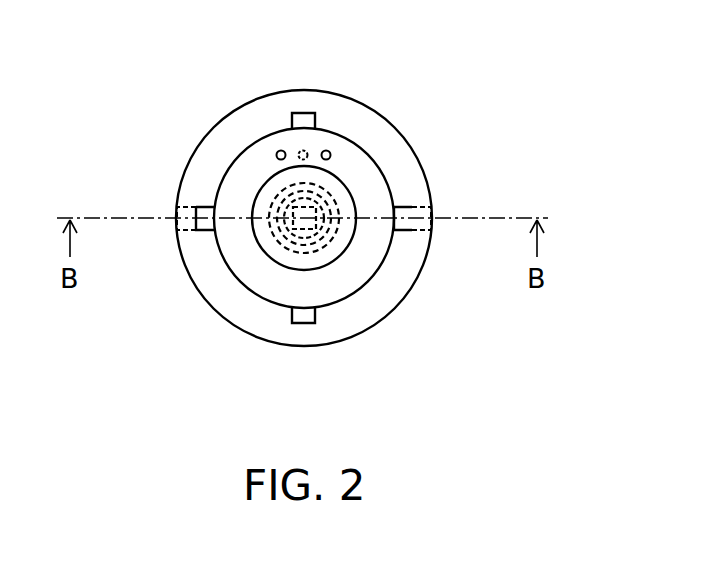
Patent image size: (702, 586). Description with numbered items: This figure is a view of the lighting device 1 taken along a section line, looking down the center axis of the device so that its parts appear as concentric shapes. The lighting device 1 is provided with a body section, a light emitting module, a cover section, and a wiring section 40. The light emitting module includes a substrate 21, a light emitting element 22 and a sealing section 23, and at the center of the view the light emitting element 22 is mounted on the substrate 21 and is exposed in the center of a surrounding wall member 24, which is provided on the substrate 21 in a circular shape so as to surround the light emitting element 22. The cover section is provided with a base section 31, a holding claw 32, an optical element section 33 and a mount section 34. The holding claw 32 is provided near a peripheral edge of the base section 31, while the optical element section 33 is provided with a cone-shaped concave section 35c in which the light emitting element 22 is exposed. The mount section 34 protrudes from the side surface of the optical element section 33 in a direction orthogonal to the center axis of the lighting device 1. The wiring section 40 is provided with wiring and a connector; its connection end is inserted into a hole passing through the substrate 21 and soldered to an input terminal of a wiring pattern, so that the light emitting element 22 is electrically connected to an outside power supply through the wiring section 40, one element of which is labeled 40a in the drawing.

The lighting device 1 is at (197, 93).
The substrate 21 is at (280, 233).
The light emitting element 22 is at (298, 224).
The sealing section 23 is at (310, 233).
The surrounding wall member 24 is at (320, 237).
The base section 31 is at (352, 120).
The holding claw 32 is at (428, 232).
The optical element section 33 is at (410, 187).
The mount section 34 is at (306, 317).
The cone-shaped concave section 35c is at (365, 180).
The wiring section 40 is at (337, 82).
The terminal 40a is at (303, 151).